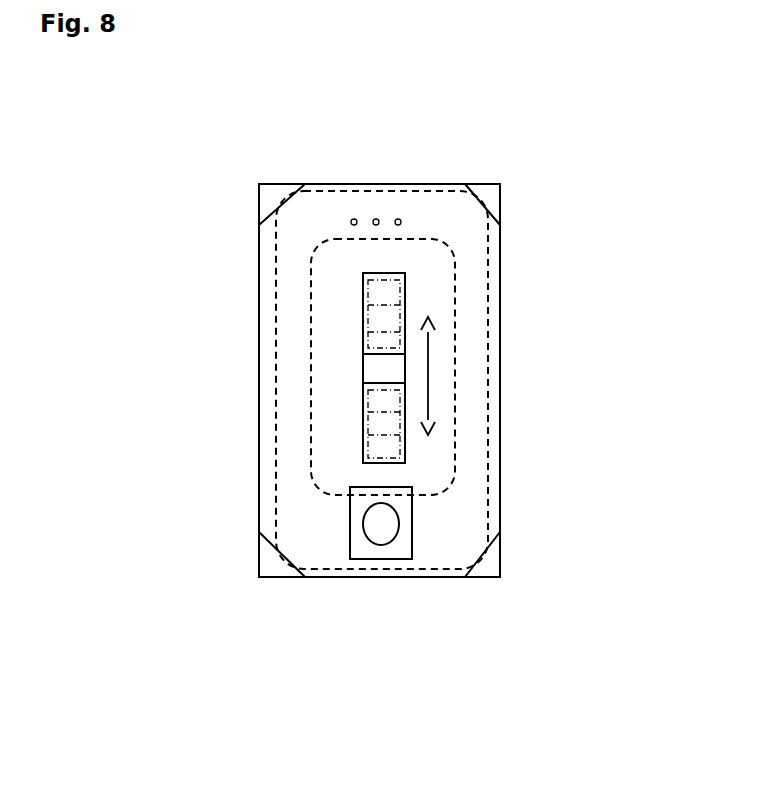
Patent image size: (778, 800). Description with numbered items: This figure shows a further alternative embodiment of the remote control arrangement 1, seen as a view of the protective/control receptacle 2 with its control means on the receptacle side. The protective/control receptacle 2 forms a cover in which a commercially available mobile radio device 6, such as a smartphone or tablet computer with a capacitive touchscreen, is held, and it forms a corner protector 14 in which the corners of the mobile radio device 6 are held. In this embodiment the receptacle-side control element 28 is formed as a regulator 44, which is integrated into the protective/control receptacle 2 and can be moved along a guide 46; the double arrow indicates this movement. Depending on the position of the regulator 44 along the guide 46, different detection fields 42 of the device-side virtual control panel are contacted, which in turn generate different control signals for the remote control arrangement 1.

The remote control arrangement 1 is at (277, 146).
The protective/control receptacle 2 is at (442, 185).
The corner protector 14 is at (500, 190).
The mobile radio device 6 is at (478, 287).
The guide 46 is at (363, 303).
The detection fields 42 is at (355, 372).
The control element 28 is at (355, 375).
The regulator 44 is at (400, 372).